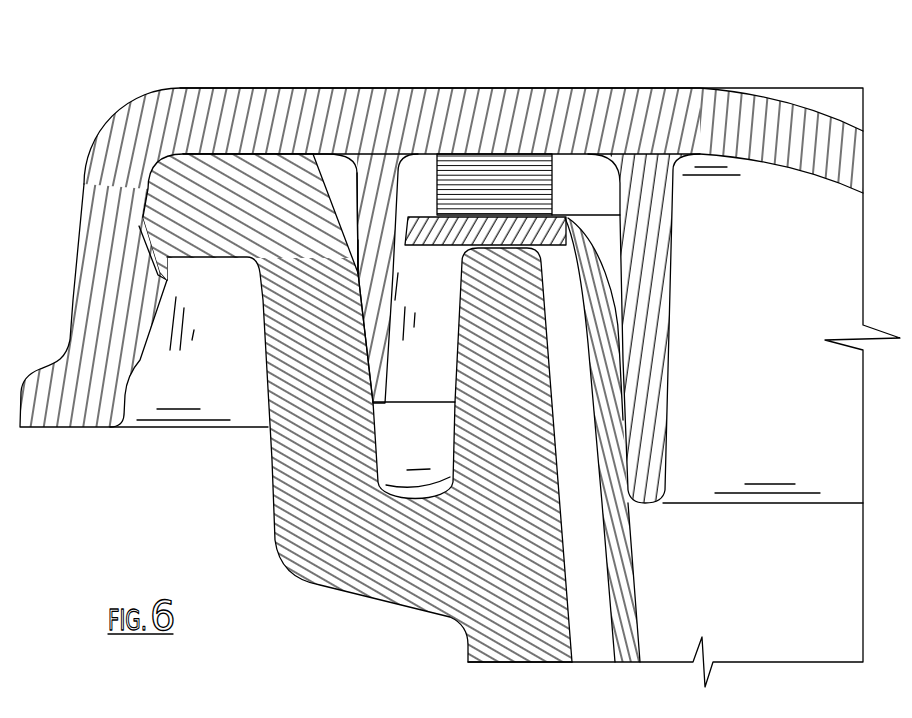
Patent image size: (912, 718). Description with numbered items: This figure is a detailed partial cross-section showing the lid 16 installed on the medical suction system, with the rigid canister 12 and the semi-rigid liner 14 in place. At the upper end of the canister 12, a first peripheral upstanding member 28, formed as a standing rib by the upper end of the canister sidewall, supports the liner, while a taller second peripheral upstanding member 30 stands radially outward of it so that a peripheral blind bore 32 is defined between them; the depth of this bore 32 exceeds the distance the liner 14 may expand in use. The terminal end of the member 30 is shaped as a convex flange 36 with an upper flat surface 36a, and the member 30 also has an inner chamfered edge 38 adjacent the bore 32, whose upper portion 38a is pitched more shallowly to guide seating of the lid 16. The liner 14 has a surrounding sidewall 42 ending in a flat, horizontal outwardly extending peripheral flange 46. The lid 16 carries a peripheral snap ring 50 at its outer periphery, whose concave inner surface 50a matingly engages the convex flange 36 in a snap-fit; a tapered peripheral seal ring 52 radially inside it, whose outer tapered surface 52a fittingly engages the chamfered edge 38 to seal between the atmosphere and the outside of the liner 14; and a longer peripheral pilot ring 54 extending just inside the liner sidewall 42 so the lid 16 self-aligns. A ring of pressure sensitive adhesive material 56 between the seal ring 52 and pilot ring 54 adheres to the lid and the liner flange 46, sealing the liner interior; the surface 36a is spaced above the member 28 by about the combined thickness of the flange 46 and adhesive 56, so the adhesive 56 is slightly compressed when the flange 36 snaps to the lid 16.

The rigid canister 12 is at (365, 346).
The semi-rigid liner 14 is at (643, 628).
The lid 16 is at (730, 137).
The first peripheral upstanding member 28 is at (512, 333).
The second peripheral upstanding member 30 is at (322, 325).
The peripheral blind bore 32 is at (403, 458).
The flange 36 is at (278, 205).
The upper flat surface 36a is at (250, 152).
The inner chamfered edge 38 is at (368, 312).
The upper portion of the chamfered edge 38a is at (337, 193).
The sidewall 42 is at (637, 582).
The peripheral flange 46 is at (518, 244).
The peripheral snap ring 50 is at (110, 336).
The inner surface of the snap ring 50a is at (148, 234).
The peripheral seal ring 52 is at (389, 219).
The outer tapered surface 52a is at (357, 273).
The peripheral pilot ring 54 is at (655, 286).
The adhesive material 56 is at (506, 196).